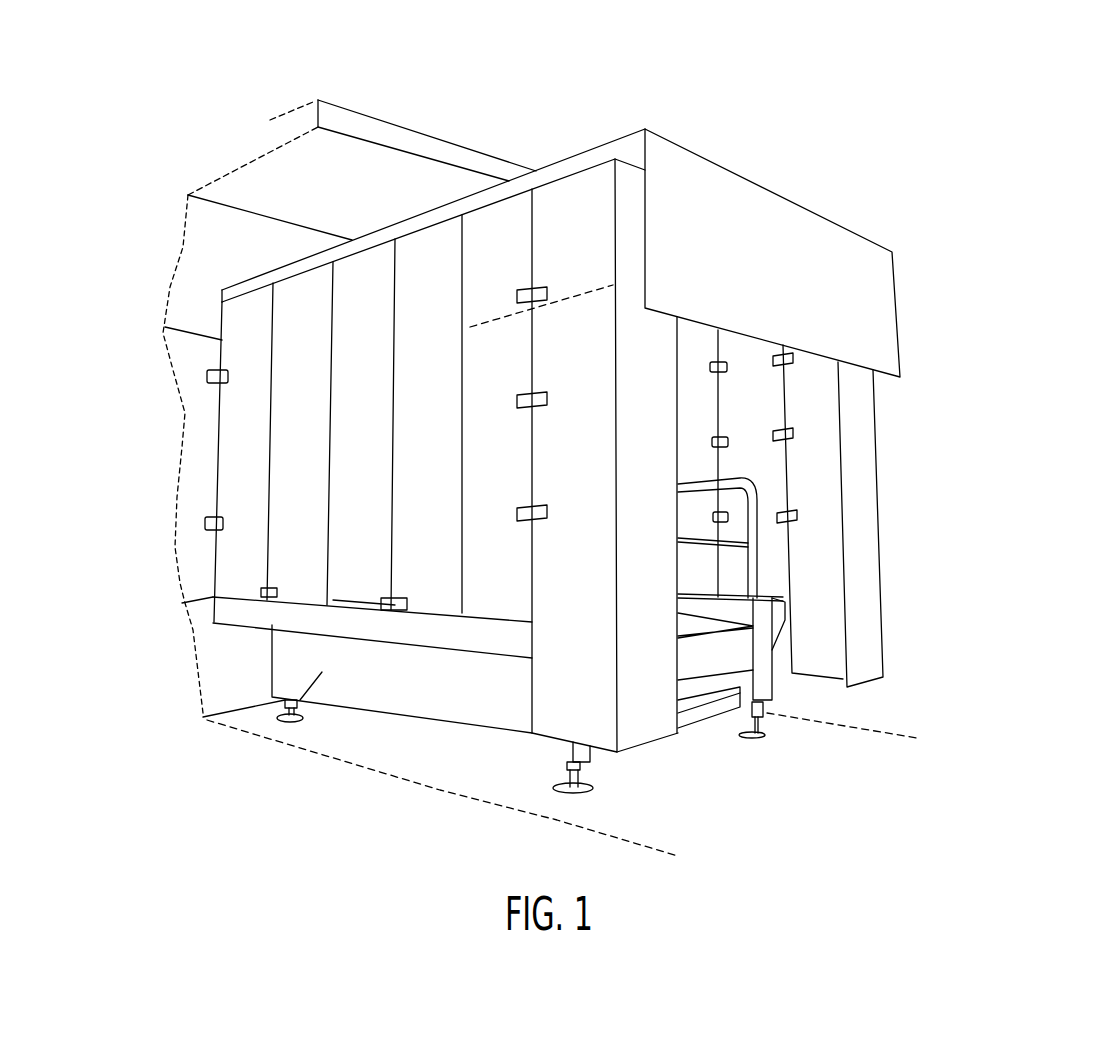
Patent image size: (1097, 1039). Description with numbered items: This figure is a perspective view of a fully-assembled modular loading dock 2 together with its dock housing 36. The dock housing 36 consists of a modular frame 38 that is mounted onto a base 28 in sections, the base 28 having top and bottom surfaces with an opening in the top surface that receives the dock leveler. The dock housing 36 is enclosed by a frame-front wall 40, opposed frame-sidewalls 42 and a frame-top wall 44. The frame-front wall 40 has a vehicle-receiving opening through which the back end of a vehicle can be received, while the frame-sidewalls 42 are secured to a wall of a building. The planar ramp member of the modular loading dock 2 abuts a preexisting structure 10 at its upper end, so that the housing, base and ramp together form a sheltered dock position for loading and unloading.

The modular loading dock 2 is at (717, 652).
The preexisting structure 10 is at (200, 432).
The base 28 is at (285, 720).
The dock housing 36 is at (575, 210).
The modular frame 38 is at (350, 533).
The frame-front wall 40 is at (858, 445).
The frame-sidewalls 42 is at (320, 490).
The frame-top wall 44 is at (555, 160).